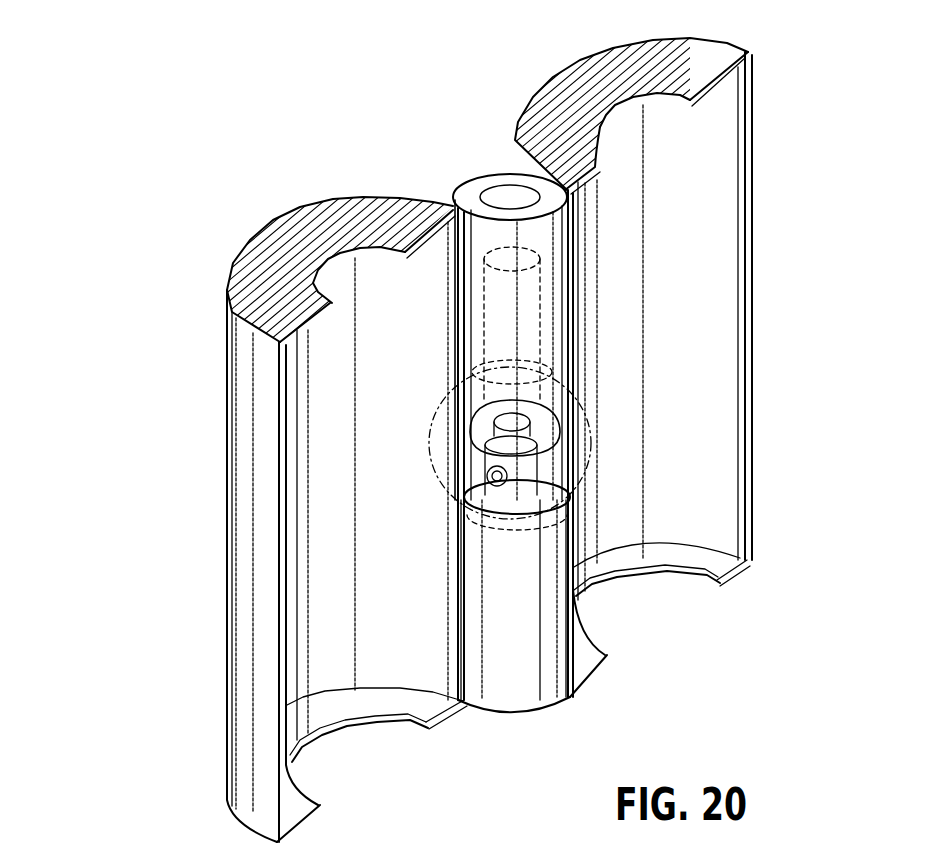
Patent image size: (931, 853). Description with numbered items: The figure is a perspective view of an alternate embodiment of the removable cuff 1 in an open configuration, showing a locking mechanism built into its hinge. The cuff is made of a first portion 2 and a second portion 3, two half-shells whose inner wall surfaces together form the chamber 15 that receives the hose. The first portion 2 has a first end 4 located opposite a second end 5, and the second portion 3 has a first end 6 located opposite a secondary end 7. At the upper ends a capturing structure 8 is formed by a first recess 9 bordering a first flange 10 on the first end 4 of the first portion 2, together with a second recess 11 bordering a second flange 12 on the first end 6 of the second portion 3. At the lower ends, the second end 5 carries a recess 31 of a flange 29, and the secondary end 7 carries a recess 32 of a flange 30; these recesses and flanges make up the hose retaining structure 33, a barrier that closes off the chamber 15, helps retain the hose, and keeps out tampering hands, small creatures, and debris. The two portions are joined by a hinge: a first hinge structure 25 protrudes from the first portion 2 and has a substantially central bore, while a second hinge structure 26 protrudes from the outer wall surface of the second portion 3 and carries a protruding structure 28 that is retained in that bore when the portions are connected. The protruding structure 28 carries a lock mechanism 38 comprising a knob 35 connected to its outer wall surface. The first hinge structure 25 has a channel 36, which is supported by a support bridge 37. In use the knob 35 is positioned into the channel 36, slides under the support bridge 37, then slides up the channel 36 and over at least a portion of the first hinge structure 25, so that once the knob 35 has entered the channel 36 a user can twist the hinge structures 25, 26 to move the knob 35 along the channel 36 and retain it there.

The removable cuff 1 is at (116, 258).
The first portion 2 is at (234, 560).
The second portion 3 is at (735, 481).
The first end 4 is at (273, 224).
The second end 5 is at (427, 725).
The first end 6 is at (713, 43).
The secondary end 7 is at (707, 583).
The capturing structure 8 is at (318, 297).
The first recess 9 is at (379, 256).
The first flange 10 is at (406, 254).
The second recess 11 is at (652, 130).
The second flange 12 is at (605, 150).
The chamber 15 is at (420, 384).
The first hinge structure 25 is at (490, 230).
The second hinge structure 26 is at (493, 633).
The protruding structure 28 is at (516, 325).
The flange 29 is at (302, 825).
The flange 30 is at (737, 574).
The recess 31 is at (337, 733).
The recess 32 is at (610, 593).
The hose retaining structure 33 is at (380, 707).
The knob 35 is at (466, 489).
The channel 36 is at (462, 419).
The support bridge 37 is at (472, 458).
The lock mechanism 38 is at (530, 360).